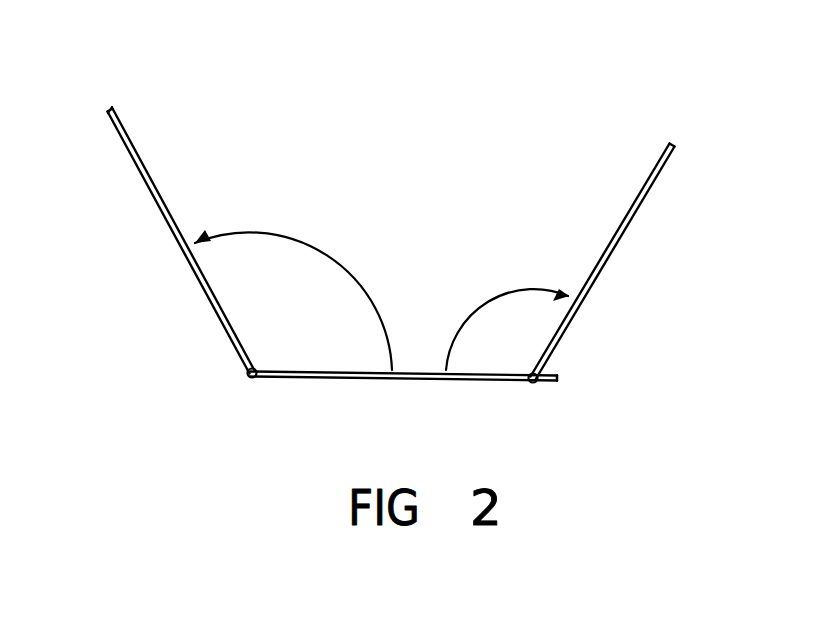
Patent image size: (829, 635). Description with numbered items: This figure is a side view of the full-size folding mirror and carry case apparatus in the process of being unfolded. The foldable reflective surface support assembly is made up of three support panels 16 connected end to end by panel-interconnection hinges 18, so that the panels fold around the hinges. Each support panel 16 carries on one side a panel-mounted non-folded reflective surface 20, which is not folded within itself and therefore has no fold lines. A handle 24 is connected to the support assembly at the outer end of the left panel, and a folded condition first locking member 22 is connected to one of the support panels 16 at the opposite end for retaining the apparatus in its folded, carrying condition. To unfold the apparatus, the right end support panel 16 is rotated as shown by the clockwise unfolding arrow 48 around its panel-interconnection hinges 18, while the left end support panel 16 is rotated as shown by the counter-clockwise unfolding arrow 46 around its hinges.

The support panels 16 is at (168, 217).
The panel-interconnection hinges 18 is at (247, 381).
The panel-mounted non-folded reflective surfaces 20 is at (406, 284).
The folded condition first locking member 22 is at (557, 378).
The handle 24 is at (110, 110).
The counter-clockwise unfolding arrow 46 is at (335, 247).
The clockwise unfolding arrow 48 is at (503, 297).